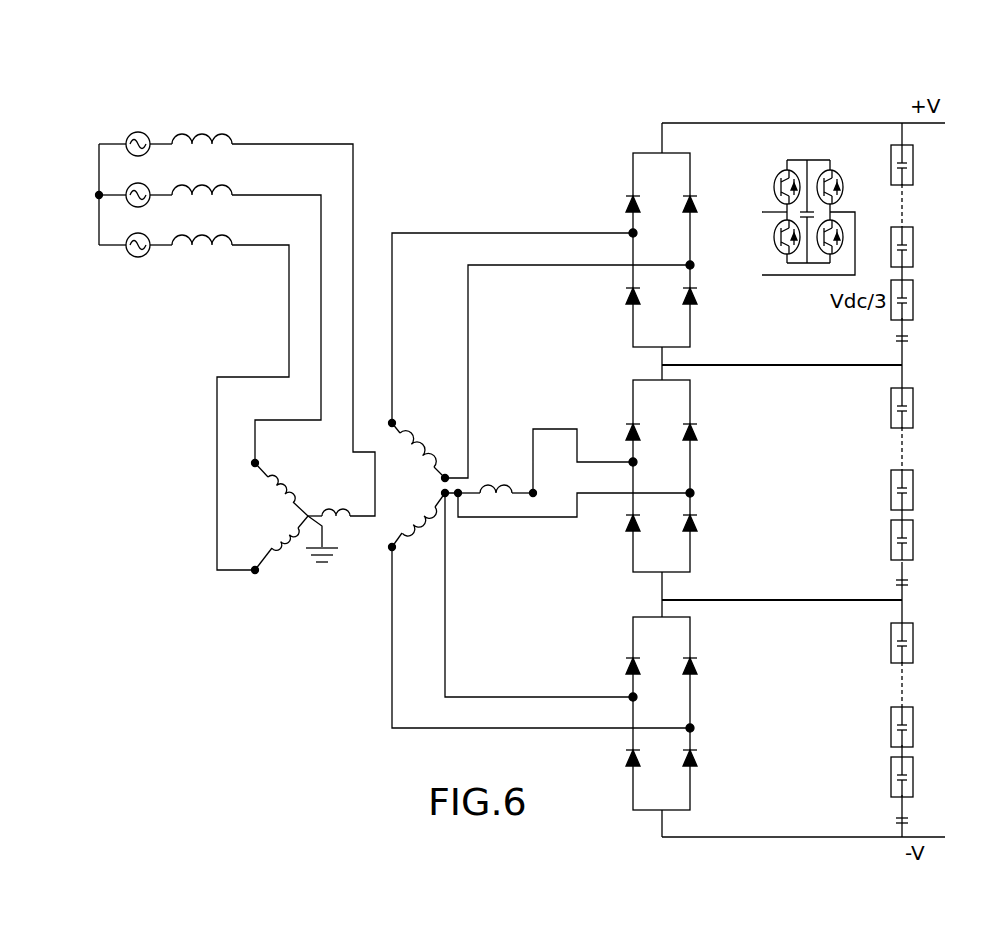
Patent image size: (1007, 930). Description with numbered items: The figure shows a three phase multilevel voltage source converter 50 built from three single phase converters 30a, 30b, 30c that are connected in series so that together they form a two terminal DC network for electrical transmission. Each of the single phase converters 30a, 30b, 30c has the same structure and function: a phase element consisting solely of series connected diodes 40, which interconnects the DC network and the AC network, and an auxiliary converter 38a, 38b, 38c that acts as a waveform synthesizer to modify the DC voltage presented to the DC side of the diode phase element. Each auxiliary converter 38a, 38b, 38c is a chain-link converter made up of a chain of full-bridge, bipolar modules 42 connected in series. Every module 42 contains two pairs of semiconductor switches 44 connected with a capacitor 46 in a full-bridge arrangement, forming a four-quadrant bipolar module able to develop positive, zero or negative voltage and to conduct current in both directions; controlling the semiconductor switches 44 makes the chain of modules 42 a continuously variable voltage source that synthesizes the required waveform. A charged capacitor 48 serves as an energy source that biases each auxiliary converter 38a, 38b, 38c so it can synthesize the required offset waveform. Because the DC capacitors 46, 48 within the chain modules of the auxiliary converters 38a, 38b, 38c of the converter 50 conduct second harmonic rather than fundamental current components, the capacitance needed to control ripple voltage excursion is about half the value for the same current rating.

The three phase multilevel voltage source converter 50 is at (168, 104).
The single phase converter 30a is at (712, 119).
The single phase converter 30b is at (728, 358).
The single phase converter 30c is at (724, 595).
The series connected diodes 40 is at (682, 205).
The module 42 is at (808, 140).
The semiconductor switch 44 is at (775, 186).
The capacitor 46 is at (808, 222).
The auxiliary converter 38a is at (922, 243).
The auxiliary converter 38b is at (922, 486).
The auxiliary converter 38c is at (922, 723).
The charged capacitor 48 is at (905, 341).